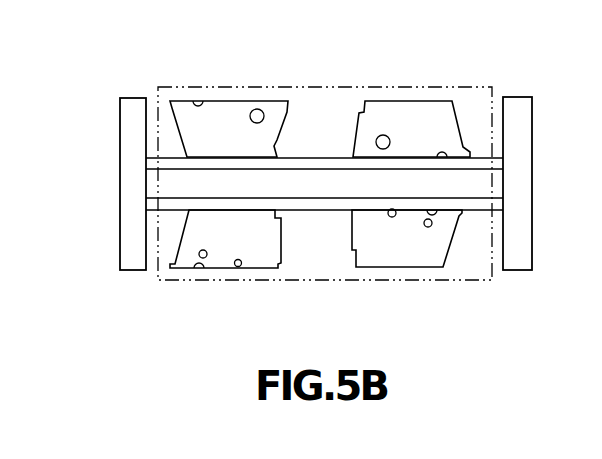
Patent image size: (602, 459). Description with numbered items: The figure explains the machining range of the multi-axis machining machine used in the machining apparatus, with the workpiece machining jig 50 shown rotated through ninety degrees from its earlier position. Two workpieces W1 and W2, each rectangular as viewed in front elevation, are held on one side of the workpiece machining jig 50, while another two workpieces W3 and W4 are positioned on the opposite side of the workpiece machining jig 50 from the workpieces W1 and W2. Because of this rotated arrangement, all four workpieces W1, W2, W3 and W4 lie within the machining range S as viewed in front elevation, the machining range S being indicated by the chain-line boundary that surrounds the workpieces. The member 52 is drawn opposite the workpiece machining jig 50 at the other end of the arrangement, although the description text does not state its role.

The machining range S is at (200, 84).
The workpiece W1 is at (237, 112).
The workpiece W2 is at (407, 112).
The workpiece W3 is at (225, 255).
The workpiece W4 is at (402, 253).
The workpiece machining jig 50 is at (120, 182).
The support member 52 is at (497, 183).